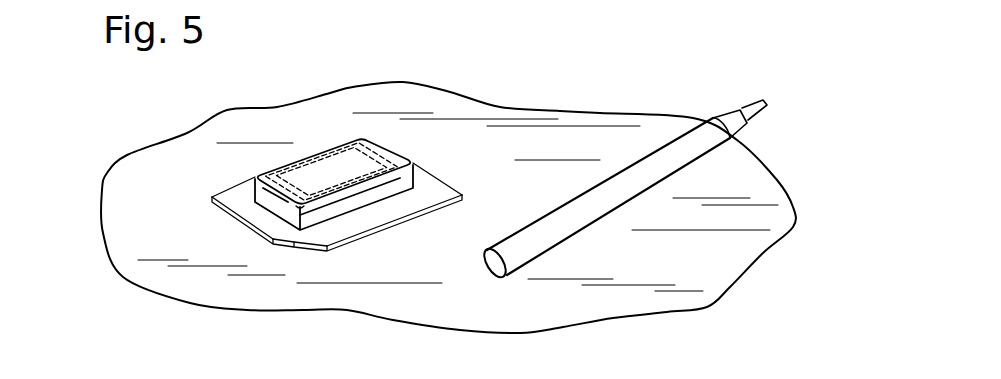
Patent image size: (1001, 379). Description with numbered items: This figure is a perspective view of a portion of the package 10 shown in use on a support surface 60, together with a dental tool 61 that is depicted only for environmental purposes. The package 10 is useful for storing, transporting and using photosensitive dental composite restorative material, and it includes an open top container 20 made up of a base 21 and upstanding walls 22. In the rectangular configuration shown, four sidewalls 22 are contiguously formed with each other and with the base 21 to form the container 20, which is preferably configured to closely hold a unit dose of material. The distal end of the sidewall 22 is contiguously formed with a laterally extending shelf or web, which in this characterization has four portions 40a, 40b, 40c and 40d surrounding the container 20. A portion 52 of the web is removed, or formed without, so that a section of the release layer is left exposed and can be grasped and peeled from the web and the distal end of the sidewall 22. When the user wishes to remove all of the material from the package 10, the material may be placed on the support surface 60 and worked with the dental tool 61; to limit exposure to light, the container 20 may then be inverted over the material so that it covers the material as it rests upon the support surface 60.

The package 10 is at (319, 183).
The open top container 20 is at (319, 215).
The base 21 is at (364, 138).
The upstanding wall 22 is at (424, 163).
The web portion 40a is at (253, 217).
The web portion 40b is at (253, 181).
The web portion 40c is at (434, 177).
The web portion 40d is at (386, 226).
The removed portion of web 52 is at (293, 243).
The support surface 60 is at (723, 270).
The dental tool 61 is at (663, 163).